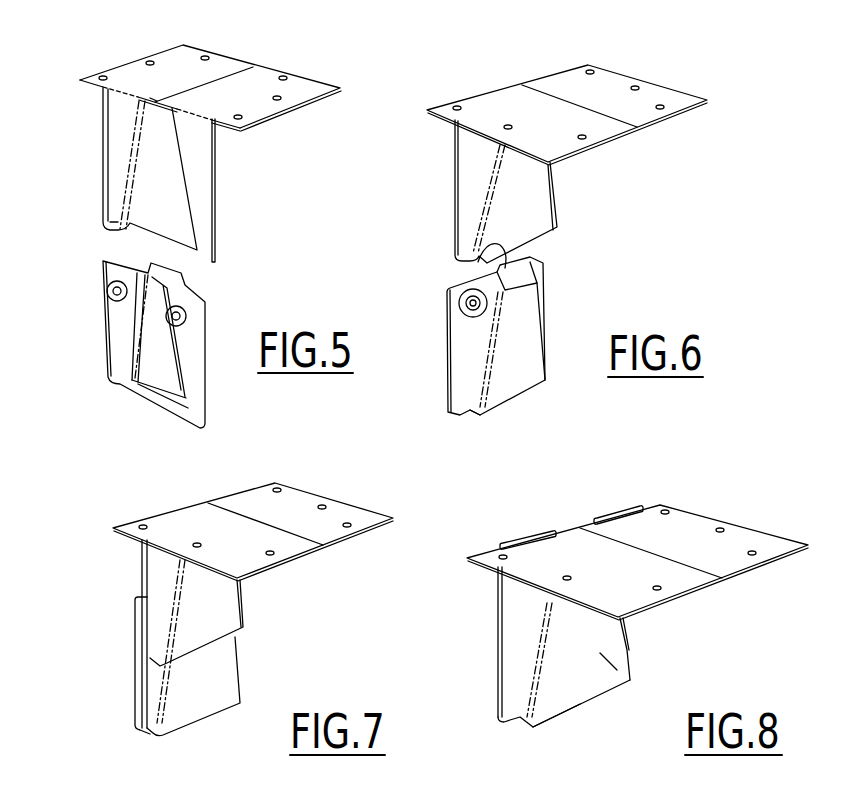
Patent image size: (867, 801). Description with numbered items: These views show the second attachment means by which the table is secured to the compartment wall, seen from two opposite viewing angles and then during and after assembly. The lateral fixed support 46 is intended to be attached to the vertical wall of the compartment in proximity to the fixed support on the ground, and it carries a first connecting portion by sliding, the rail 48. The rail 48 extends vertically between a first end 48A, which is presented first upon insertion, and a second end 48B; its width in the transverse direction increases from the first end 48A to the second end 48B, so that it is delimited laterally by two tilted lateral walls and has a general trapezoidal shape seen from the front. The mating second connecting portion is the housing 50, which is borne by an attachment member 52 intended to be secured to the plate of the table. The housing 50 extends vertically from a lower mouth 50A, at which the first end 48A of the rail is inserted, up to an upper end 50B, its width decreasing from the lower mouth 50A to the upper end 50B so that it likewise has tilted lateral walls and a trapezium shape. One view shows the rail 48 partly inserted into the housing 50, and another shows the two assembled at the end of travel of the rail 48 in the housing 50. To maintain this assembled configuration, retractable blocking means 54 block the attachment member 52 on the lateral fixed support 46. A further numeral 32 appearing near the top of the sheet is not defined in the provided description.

In FIG. 5, the support structure 32 is at (341, 1).
In FIG. 5, the lateral fixed support 46 is at (157, 335).
In FIG. 6, the lateral fixed support 46 is at (574, 340).
In FIG. 7, the lateral fixed support 46 is at (153, 663).
In FIG. 8, the lateral fixed support 46 is at (493, 682).
In FIG. 5, the rail 48 is at (187, 285).
In FIG. 6, the rail 48 is at (510, 362).
In FIG. 7, the rail 48 is at (207, 688).
In FIG. 6, the first end 48A is at (504, 270).
In FIG. 6, the second end 48B is at (507, 407).
In FIG. 5, the housing 50 is at (180, 70).
In FIG. 6, the housing 50 is at (515, 192).
In FIG. 7, the housing 50 is at (217, 613).
In FIG. 8, the housing 50 is at (600, 655).
In FIG. 5, the lower mouth 50A is at (145, 233).
In FIG. 5, the upper end 50B is at (152, 100).
In FIG. 6, the attachment member 52 is at (488, 110).
In FIG. 7, the attachment member 52 is at (168, 527).
In FIG. 8, the attachment member 52 is at (530, 548).
In FIG. 8, the retractable blocking means 54 is at (582, 725).